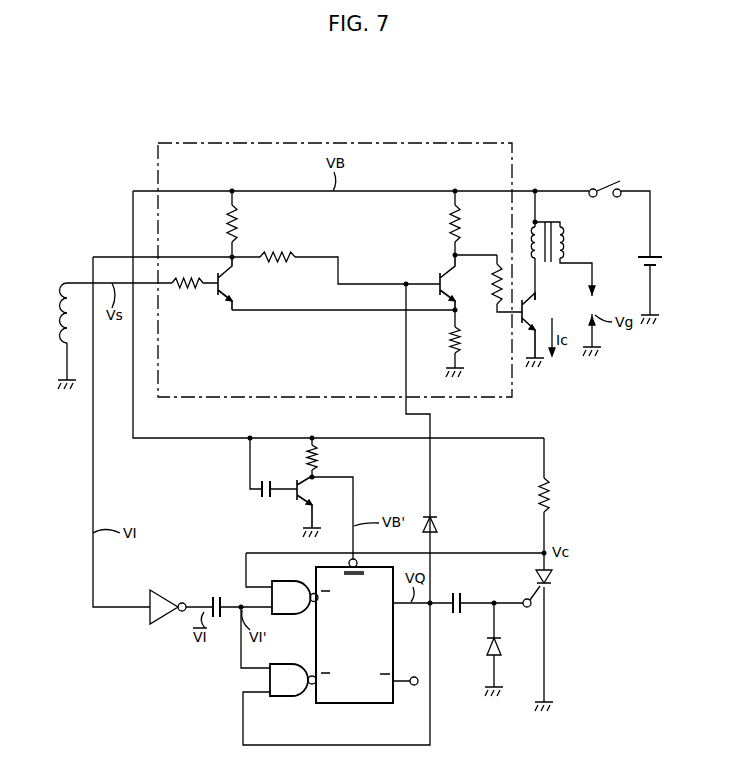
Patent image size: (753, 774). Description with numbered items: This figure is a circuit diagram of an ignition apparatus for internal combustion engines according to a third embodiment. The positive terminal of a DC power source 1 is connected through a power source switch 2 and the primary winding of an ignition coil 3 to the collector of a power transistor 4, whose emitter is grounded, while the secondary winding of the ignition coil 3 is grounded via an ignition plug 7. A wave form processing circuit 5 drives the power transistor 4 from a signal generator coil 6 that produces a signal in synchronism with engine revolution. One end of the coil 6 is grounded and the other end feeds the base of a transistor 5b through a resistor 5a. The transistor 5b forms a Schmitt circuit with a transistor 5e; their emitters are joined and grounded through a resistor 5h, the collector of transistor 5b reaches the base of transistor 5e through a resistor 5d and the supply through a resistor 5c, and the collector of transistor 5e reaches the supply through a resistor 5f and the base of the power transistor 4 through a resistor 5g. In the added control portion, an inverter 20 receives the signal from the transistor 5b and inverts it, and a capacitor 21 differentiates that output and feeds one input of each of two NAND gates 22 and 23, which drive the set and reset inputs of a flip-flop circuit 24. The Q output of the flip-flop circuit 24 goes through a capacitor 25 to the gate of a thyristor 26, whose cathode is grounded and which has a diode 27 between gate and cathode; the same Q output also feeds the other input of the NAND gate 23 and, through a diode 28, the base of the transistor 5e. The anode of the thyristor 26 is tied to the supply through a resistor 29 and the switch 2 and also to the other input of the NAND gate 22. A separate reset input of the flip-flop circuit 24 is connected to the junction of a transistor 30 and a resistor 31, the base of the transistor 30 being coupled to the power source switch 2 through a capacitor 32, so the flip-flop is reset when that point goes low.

The DC power source 1 is at (664, 263).
The power source switch 2 is at (601, 186).
The ignition coil 3 is at (545, 220).
The power transistor 4 is at (530, 312).
The wave form processing circuit 5 is at (428, 143).
The resistor 5a is at (186, 290).
The transistor 5b is at (222, 285).
The resistor 5c is at (238, 221).
The resistor 5d is at (292, 255).
The transistor 5e is at (442, 272).
The resistor 5f is at (449, 222).
The resistor 5g is at (491, 286).
The resistor 5h is at (461, 335).
The signal generator coil 6 is at (62, 325).
The ignition plug 7 is at (593, 301).
The inverter 20 is at (165, 625).
The capacitor 21 is at (216, 596).
The NAND gate 22 is at (285, 580).
The NAND gate 23 is at (288, 698).
The flip-flop circuit 24 is at (353, 704).
The capacitor 25 is at (456, 592).
The thyristor 26 is at (553, 580).
The diode 27 is at (487, 645).
The diode 28 is at (438, 525).
The resistor 29 is at (550, 496).
The transistor 30 is at (305, 490).
The resistor 31 is at (318, 459).
The capacitor 32 is at (266, 500).